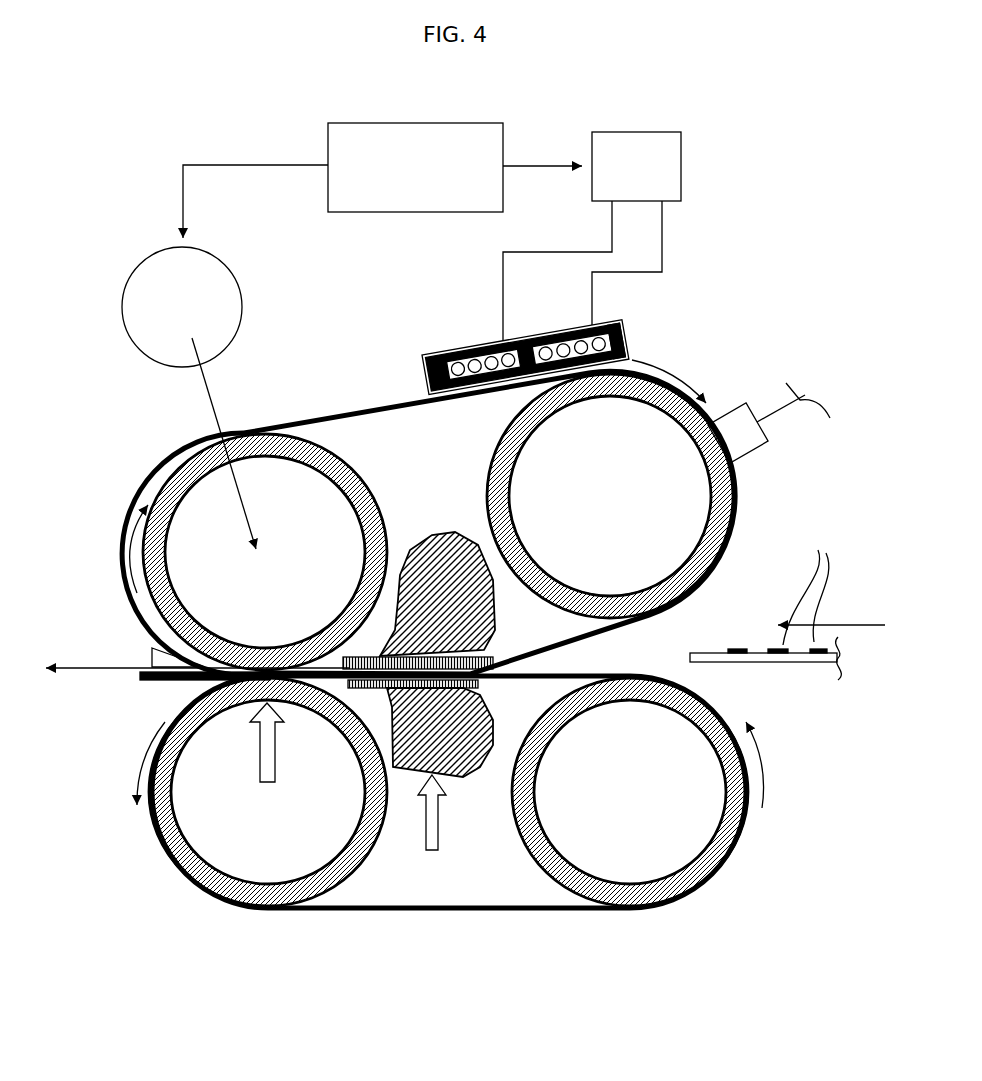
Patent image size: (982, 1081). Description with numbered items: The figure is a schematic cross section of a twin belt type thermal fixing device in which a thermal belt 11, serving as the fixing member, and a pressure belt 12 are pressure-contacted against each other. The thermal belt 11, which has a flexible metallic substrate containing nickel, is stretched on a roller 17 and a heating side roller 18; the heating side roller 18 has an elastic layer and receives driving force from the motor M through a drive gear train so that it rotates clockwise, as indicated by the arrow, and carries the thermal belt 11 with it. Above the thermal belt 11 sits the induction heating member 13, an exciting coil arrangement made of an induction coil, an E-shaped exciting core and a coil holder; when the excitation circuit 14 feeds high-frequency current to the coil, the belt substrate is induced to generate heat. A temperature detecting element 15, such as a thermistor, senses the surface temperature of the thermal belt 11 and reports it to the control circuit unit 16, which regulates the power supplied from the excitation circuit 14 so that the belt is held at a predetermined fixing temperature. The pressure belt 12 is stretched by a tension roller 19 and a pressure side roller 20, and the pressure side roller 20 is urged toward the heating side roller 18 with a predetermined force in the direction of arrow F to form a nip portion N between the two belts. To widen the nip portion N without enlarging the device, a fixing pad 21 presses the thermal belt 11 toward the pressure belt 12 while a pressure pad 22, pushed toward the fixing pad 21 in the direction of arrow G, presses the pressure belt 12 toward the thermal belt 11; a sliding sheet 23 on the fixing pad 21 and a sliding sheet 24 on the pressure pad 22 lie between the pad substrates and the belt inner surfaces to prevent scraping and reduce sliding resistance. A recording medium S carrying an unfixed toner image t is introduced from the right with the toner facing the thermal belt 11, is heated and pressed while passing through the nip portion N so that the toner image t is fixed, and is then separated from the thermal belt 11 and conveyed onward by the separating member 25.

The thermal belt 11 is at (373, 412).
The pressure belt 12 is at (172, 722).
The induction heating member 13 is at (523, 337).
The excitation circuit 14 is at (592, 236).
The temperature detecting element 15 is at (740, 405).
The control circuit unit 16 is at (382, 180).
The roller 17 is at (735, 495).
The heating side roller 18 is at (353, 468).
The tension roller 19 is at (735, 845).
The pressure side roller 20 is at (362, 866).
The fixing pad 21 is at (420, 533).
The pressure pad 22 is at (476, 768).
The sliding sheet 23 is at (493, 657).
The sliding sheet 24 is at (478, 687).
The separating member 25 is at (150, 650).
The drive source (motor) M is at (189, 398).
The nip portion N is at (377, 653).
The pressing force direction F is at (267, 760).
The pressing force direction G is at (423, 815).
The recording medium S is at (805, 663).
The unfixed toner image t is at (806, 589).